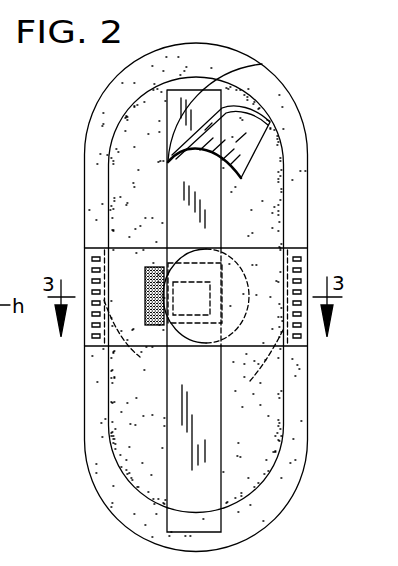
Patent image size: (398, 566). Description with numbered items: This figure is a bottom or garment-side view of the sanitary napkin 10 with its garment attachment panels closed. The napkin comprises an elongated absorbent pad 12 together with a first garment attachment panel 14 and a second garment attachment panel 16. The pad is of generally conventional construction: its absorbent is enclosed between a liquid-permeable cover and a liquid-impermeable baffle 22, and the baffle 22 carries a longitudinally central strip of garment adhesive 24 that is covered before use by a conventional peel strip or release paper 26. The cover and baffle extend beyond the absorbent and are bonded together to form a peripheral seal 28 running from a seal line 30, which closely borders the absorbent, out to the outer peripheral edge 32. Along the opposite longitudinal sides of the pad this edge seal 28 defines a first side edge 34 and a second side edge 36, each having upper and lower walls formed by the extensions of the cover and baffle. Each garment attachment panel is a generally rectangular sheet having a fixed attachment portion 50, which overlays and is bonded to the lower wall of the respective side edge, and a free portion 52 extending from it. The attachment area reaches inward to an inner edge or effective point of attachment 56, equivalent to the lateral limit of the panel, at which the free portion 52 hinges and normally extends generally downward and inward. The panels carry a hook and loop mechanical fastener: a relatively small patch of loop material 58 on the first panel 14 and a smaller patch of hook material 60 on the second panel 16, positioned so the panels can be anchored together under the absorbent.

The sanitary napkin 10 is at (68, 129).
The absorbent pad 12 is at (72, 165).
The first garment attachment panel 14 is at (148, 242).
The second garment attachment panel 16 is at (248, 241).
The liquid-impermeable baffle 22 is at (155, 431).
The garment adhesive 24 is at (262, 64).
The release paper 26 is at (271, 118).
The peripheral seal 28 is at (197, 57).
The seal line 30 is at (112, 137).
The outer peripheral edge 32 is at (308, 173).
The first side edge 34 is at (71, 407).
The second side edge 36 is at (313, 407).
The attachment portion 50 is at (97, 248).
The free portion 52 is at (127, 246).
The effective point of attachment 56 is at (193, 356).
The patch of loop material 58 is at (234, 316).
The patch of hook material 60 is at (230, 277).